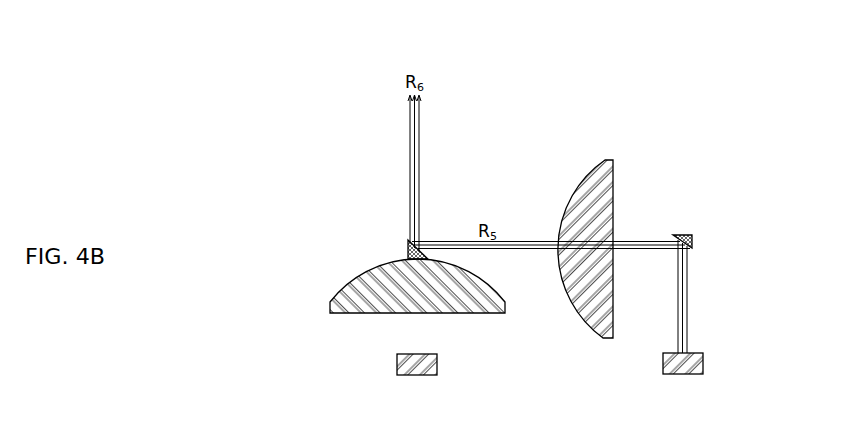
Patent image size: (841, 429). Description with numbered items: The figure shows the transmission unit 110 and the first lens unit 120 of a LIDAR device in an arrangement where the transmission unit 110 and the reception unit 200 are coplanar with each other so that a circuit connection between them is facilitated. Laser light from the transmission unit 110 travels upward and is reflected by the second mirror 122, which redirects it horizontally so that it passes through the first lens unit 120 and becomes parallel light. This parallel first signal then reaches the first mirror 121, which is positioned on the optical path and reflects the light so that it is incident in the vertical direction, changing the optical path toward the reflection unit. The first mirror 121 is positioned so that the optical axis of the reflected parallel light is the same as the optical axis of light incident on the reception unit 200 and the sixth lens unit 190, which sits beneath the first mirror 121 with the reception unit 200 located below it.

The transmission unit 110 is at (662, 366).
The first lens unit 120 is at (607, 160).
The first mirror 121 is at (406, 250).
The second mirror 122 is at (682, 235).
The sixth lens unit 190 is at (330, 305).
The reception unit 200 is at (397, 368).